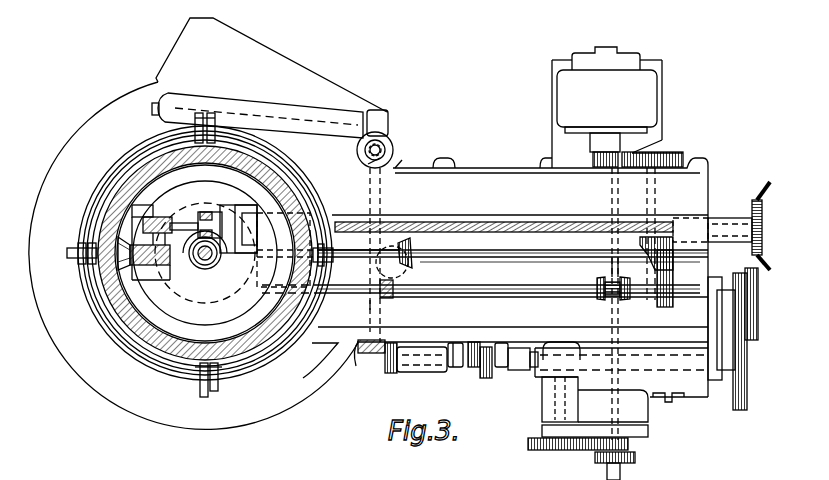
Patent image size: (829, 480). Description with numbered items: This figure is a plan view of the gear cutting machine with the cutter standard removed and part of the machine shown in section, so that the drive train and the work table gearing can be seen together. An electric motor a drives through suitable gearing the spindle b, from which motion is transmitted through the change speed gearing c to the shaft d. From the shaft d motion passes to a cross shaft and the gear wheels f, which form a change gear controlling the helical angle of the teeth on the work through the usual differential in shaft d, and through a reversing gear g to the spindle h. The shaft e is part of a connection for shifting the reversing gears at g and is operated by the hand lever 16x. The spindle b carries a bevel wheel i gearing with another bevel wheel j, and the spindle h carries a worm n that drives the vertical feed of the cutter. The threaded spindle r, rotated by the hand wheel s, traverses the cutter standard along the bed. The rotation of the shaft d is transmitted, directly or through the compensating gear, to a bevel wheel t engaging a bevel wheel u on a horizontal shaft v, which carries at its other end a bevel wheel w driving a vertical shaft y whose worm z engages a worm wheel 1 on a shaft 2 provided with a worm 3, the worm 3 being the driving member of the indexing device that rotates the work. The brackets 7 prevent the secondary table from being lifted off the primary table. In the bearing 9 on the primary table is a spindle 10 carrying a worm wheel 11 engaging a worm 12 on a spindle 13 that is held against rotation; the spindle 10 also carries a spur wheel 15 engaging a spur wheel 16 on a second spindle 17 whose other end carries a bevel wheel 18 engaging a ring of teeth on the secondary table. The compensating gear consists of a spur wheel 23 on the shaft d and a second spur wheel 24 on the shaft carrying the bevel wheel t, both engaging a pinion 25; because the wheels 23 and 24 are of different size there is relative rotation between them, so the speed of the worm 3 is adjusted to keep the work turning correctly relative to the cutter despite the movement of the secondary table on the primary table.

The worm wheel 1 is at (389, 123).
The shaft 2 is at (257, 125).
The worm 3 is at (228, 118).
The brackets 7 is at (70, 255).
The bearing 9 is at (150, 222).
The spindle 10 is at (200, 262).
The worm wheel 11 is at (226, 208).
The worm 12 is at (212, 259).
The spindle 13 is at (157, 231).
The spur wheel 15 is at (202, 222).
The spur wheel 16 is at (170, 268).
The second spindle 17 is at (150, 265).
The bevel wheel 18 is at (125, 268).
The spur wheel 23 is at (497, 372).
The second spur wheel 24 is at (466, 376).
The pinion 25 is at (478, 380).
The hand lever 16x is at (565, 168).
The electric motor a is at (648, 88).
The spindle b is at (481, 279).
The change speed gearing c is at (759, 334).
The shaft d is at (518, 366).
The shaft e is at (620, 239).
The gear wheels f is at (597, 456).
The reversing gear g is at (625, 296).
The spindle h is at (560, 273).
The bevel wheel i is at (410, 248).
The bevel wheel j is at (412, 263).
The worm n is at (393, 294).
The threaded spindle r is at (521, 234).
The hand wheel s is at (761, 208).
The bevel wheel t is at (390, 373).
The bevel wheel u is at (369, 354).
The horizontal shaft v is at (372, 306).
The bevel wheel w is at (378, 163).
The vertical shaft y is at (384, 150).
The worm z is at (398, 167).